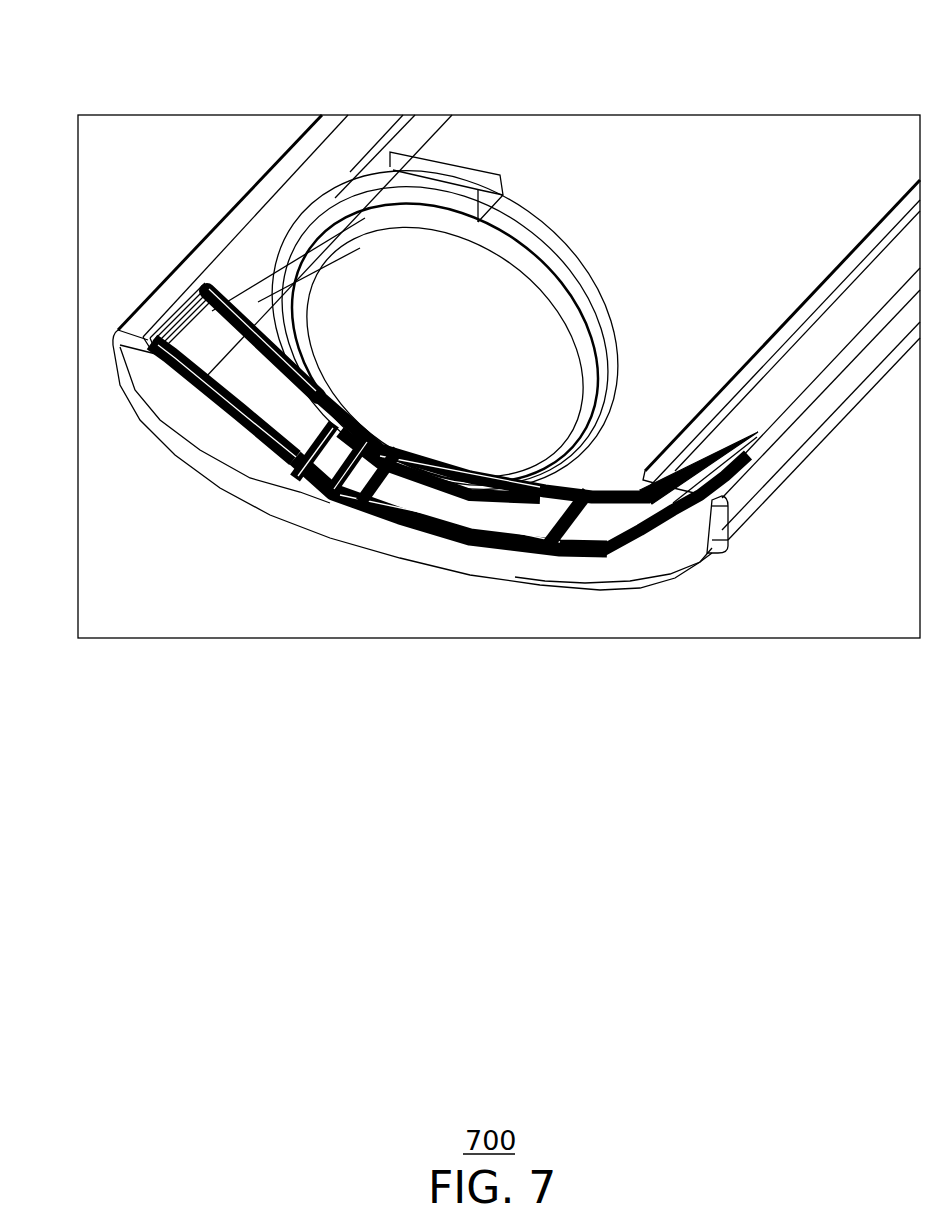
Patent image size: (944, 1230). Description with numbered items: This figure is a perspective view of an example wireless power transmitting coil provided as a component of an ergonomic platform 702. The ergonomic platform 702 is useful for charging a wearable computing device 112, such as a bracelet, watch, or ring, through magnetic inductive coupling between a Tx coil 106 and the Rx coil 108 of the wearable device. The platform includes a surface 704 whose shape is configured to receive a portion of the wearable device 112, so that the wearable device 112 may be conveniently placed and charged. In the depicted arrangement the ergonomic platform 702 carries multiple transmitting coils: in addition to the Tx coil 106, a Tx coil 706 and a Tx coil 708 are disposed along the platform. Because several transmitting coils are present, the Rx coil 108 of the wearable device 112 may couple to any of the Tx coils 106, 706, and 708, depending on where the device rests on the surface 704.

The ergonomic platform 702 is at (118, 335).
The surface 704 is at (718, 152).
The Tx coil 706 is at (240, 445).
The Tx coil 106 is at (367, 517).
The Rx coil 108 is at (397, 524).
The wearable computing device 112 is at (553, 233).
The Tx coil 708 is at (653, 533).